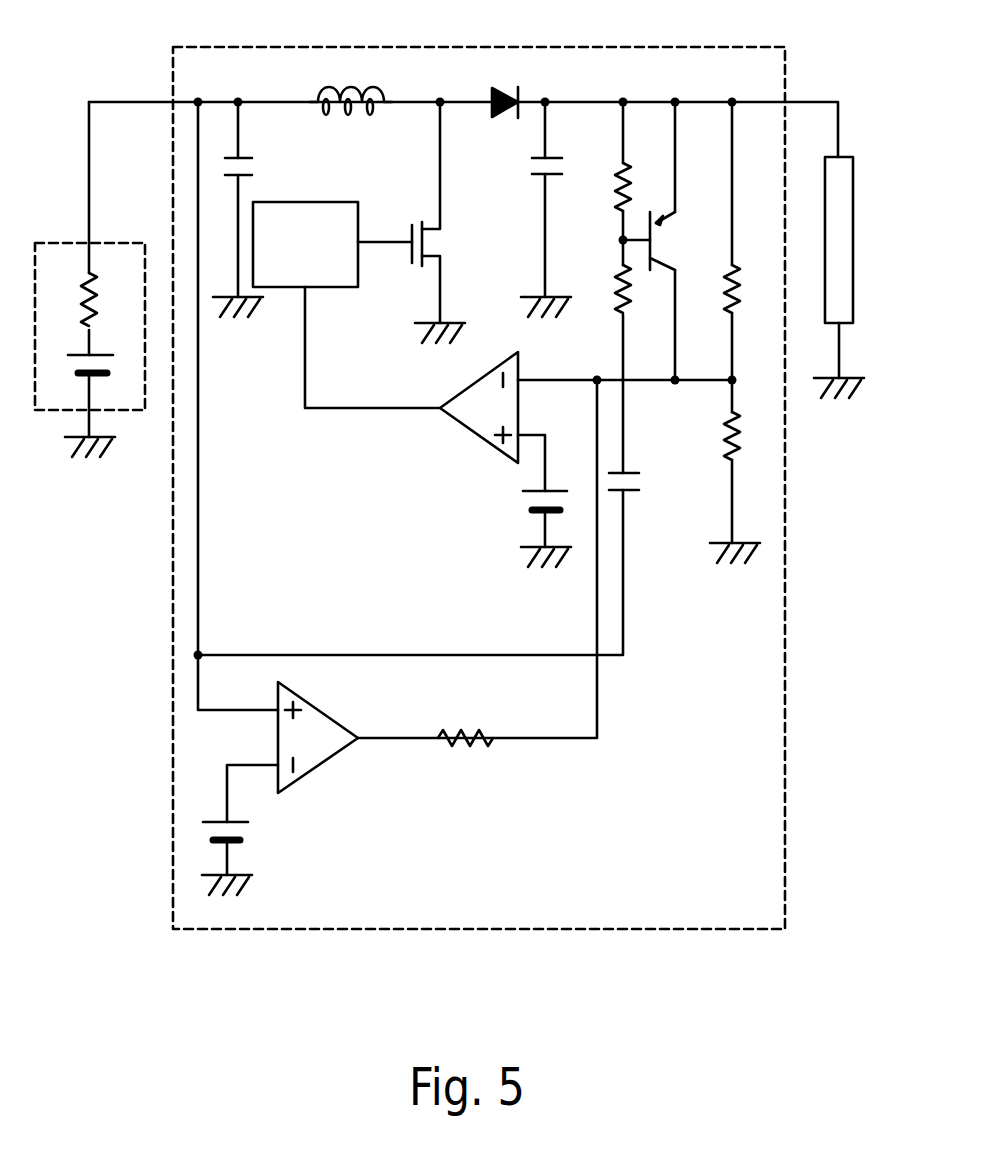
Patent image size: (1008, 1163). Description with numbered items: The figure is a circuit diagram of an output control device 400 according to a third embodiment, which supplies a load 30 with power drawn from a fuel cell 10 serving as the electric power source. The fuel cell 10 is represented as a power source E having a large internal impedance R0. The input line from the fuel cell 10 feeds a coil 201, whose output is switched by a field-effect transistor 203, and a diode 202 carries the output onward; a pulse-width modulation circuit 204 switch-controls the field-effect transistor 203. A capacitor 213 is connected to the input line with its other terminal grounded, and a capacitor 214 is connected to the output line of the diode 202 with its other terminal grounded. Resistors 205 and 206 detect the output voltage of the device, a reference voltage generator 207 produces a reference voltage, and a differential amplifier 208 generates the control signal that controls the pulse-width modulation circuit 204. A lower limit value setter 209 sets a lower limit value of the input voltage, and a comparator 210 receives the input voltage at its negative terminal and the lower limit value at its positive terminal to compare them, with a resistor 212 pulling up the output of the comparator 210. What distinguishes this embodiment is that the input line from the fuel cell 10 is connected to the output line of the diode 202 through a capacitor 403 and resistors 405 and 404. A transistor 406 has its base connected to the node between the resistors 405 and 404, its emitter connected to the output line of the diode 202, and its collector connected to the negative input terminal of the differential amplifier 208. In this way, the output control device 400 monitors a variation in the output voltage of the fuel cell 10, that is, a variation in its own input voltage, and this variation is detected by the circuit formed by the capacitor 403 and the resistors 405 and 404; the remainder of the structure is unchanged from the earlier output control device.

The output control device 400 is at (648, 44).
The fuel cell 10 is at (90, 295).
The internal impedance R0 is at (95, 282).
The power source E is at (95, 352).
The load 30 is at (843, 157).
The coil 201 is at (360, 94).
The diode 202 is at (510, 90).
The field-effect transistor 203 is at (438, 230).
The pulse-width modulation circuit 204 is at (310, 202).
The resistor 205 is at (740, 275).
The resistor 206 is at (737, 413).
The reference voltage generator 207 is at (550, 489).
The differential amplifier 208 is at (477, 378).
The lower limit value setter 209 is at (228, 820).
The comparator 210 is at (325, 714).
The resistor 212 is at (470, 738).
The capacitor 213 is at (244, 158).
The capacitor 214 is at (550, 157).
The capacitor 403 is at (627, 472).
The resistor 404 is at (633, 165).
The resistor 405 is at (628, 312).
The transistor 406 is at (662, 227).